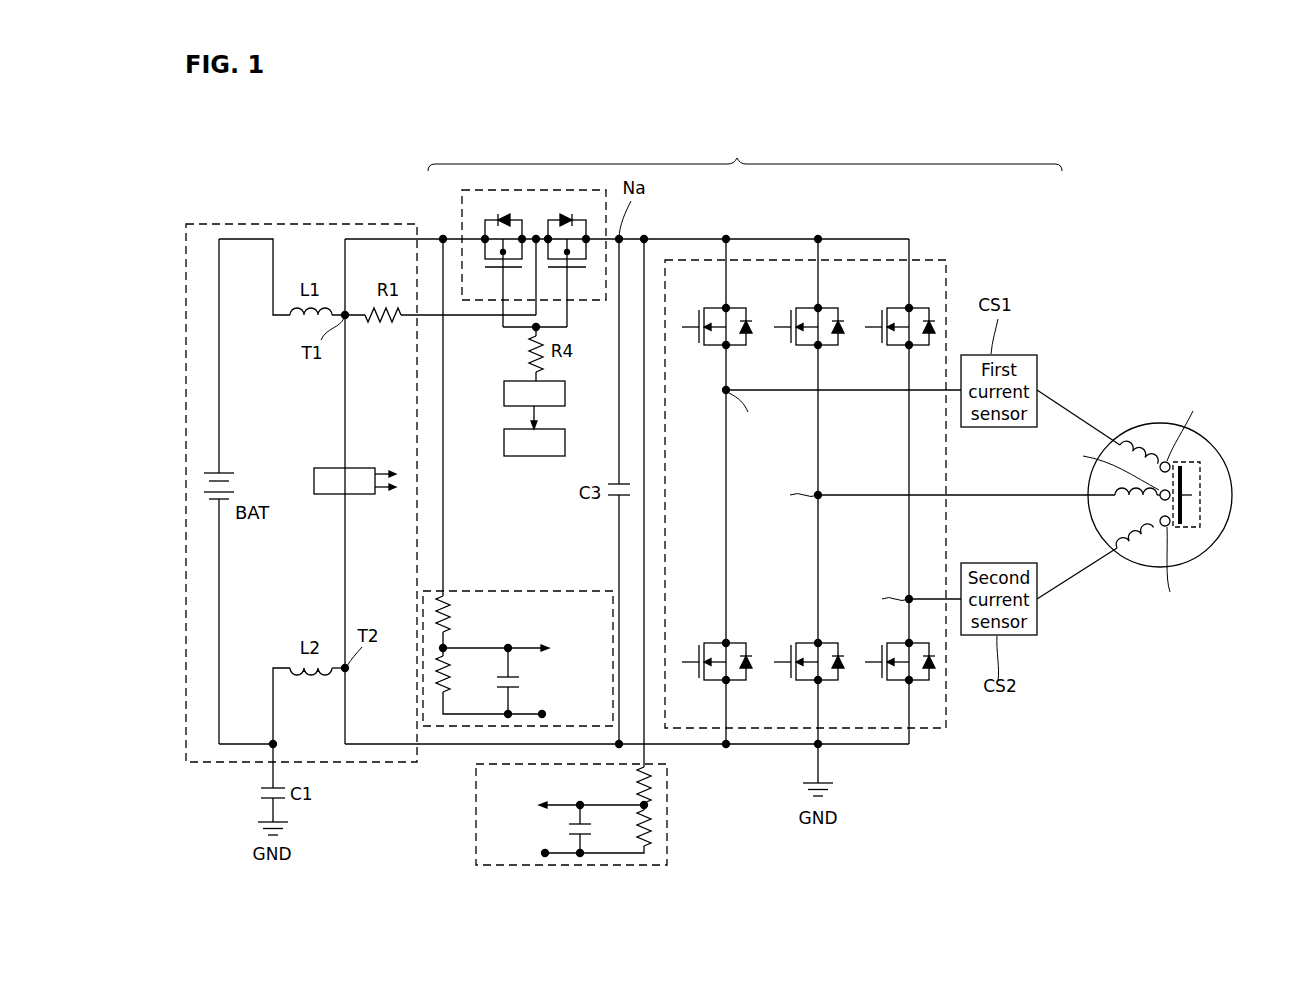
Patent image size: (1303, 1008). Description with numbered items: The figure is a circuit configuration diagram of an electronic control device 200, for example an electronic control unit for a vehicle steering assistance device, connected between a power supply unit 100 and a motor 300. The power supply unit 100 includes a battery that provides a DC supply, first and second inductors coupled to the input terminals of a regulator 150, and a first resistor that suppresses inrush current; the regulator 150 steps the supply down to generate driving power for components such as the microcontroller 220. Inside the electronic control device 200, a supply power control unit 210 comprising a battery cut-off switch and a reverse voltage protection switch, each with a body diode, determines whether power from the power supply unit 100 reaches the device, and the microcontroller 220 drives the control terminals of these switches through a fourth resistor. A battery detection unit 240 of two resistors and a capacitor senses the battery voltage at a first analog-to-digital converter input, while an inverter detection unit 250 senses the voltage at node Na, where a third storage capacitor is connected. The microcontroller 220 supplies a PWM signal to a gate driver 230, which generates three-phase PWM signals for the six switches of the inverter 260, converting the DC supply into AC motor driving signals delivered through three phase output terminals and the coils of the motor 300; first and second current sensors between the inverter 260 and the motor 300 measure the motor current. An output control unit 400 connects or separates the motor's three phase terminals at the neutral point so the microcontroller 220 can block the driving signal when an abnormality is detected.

The power supply unit 100 is at (223, 223).
The regulator 150 is at (321, 495).
The electronic control device 200 is at (745, 152).
The supply power control unit 210 is at (461, 211).
The microcontroller 220 is at (504, 394).
The gate driver 230 is at (504, 442).
The battery detection unit 240 is at (512, 591).
The inverter detection unit 250 is at (667, 805).
The inverter 260 is at (945, 260).
The motor 300 is at (1200, 555).
The output control unit 400 is at (1201, 463).